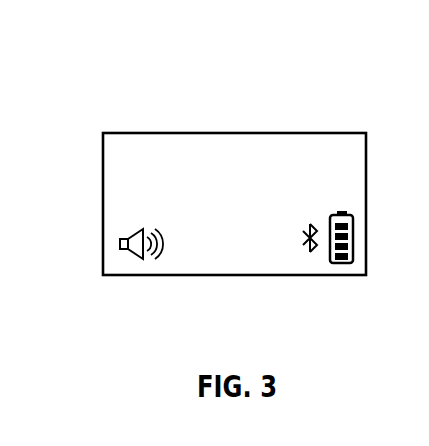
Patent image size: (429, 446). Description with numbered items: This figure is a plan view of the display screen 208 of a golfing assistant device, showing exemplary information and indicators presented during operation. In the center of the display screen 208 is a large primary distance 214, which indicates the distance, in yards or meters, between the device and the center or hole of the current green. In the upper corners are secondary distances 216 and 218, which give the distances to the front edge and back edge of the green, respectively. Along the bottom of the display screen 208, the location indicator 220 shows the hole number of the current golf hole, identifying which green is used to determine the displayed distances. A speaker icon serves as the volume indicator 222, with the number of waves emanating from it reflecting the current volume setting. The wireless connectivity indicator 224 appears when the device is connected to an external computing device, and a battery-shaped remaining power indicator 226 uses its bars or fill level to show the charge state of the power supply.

The display screen 208 is at (231, 82).
The primary distance 214 is at (212, 157).
The secondary distance 216 is at (115, 153).
The secondary distance 218 is at (359, 153).
The location indicator 220 is at (214, 266).
The volume indicator 222 is at (132, 261).
The wireless connectivity indicator 224 is at (312, 257).
The remaining power indicator 226 is at (343, 265).